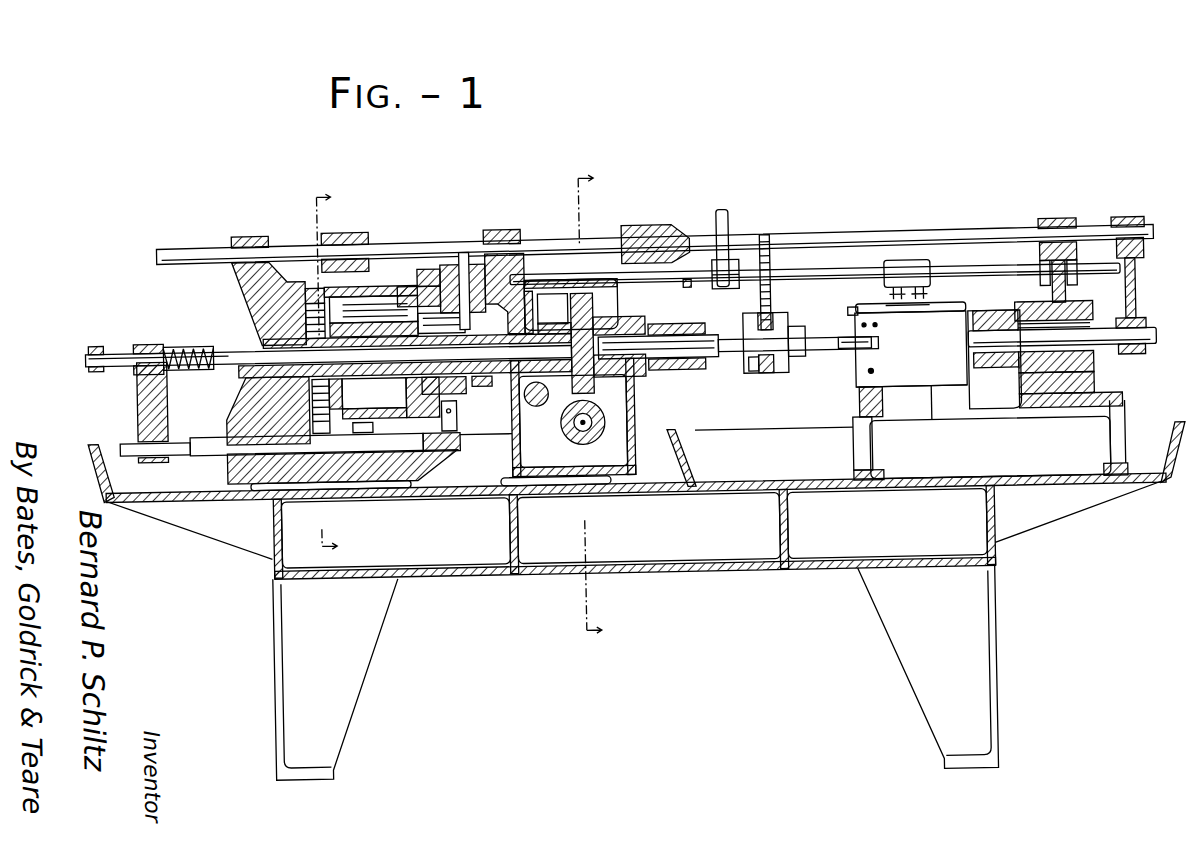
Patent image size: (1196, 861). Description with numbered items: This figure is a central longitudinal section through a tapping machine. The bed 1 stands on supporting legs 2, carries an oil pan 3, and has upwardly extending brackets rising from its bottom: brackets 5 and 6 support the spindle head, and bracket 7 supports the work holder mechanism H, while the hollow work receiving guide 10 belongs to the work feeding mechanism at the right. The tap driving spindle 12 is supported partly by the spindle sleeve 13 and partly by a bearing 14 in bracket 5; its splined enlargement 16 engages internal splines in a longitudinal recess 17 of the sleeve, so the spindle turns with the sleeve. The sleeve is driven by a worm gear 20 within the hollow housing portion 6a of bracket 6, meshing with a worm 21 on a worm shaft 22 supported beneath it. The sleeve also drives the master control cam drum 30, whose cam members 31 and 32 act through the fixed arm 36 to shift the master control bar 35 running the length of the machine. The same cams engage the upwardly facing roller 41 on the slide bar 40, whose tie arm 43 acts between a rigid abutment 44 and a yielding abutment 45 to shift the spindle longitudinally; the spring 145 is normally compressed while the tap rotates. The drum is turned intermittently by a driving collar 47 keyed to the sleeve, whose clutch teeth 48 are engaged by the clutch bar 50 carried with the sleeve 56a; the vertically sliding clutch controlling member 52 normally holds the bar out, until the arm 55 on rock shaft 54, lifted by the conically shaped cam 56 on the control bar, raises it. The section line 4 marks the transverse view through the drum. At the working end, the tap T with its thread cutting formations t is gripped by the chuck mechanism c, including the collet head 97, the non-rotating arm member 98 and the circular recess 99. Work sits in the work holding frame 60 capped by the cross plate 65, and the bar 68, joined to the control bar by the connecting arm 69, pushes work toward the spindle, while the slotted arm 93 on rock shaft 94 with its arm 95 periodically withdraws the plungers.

The bed 1 is at (272, 540).
The supporting legs 2 is at (270, 635).
The oil pan 3 is at (92, 452).
The section line 4— 4 is at (334, 373).
The bracket 5 is at (258, 285).
The bracket 6 is at (512, 228).
The hollow housing portion 6a is at (636, 405).
The bracket 7 is at (858, 400).
The hollow work receiving guide 10 is at (1095, 330).
The tap driving spindle 12 is at (242, 364).
The spindle sleeve 13 is at (366, 374).
The bearing 14 is at (268, 340).
The splined enlargement 16 is at (746, 336).
The longitudinal recess 17 is at (626, 325).
The worm gear 20 is at (572, 314).
The worm 21 is at (540, 406).
The worm shaft 22 is at (585, 444).
The master control cam drum 30 is at (372, 290).
The cam member 31 is at (355, 428).
The cam member 32 is at (315, 286).
The master control bar 35 is at (900, 238).
The fixed arm 36 is at (366, 234).
The slide bar 40 is at (230, 450).
The upwardly facing roller 41 is at (405, 432).
The tie arm 43 is at (138, 393).
The rigid abutment 44 is at (98, 342).
The yielding abutment 45 is at (165, 342).
The driving collar 47 is at (486, 386).
The clutch teeth 48 is at (532, 282).
The clutch bar 50 is at (455, 262).
The clutch controlling member 52 is at (467, 250).
The rock shaft 54 is at (690, 288).
The arm 55 is at (726, 212).
The conically shaped cam 56 is at (672, 228).
The sleeve 56a is at (376, 410).
The work holding frame 60 is at (862, 384).
The cross plate or cap 65 is at (850, 318).
The bar 68 is at (1150, 354).
The connecting arm 69 is at (1147, 297).
The slotted arm 93 is at (935, 266).
The rock shaft 94 is at (616, 278).
The arm 95 is at (430, 266).
The collet head 97 is at (796, 311).
The non-rotating arm member 98 is at (762, 304).
The circular recess 99 is at (762, 376).
The spring 145 is at (183, 366).
The chuck mechanism c is at (800, 362).
The thread cutting formations t is at (1062, 227).
The tap T is at (846, 342).
The work holder mechanism H is at (983, 389).